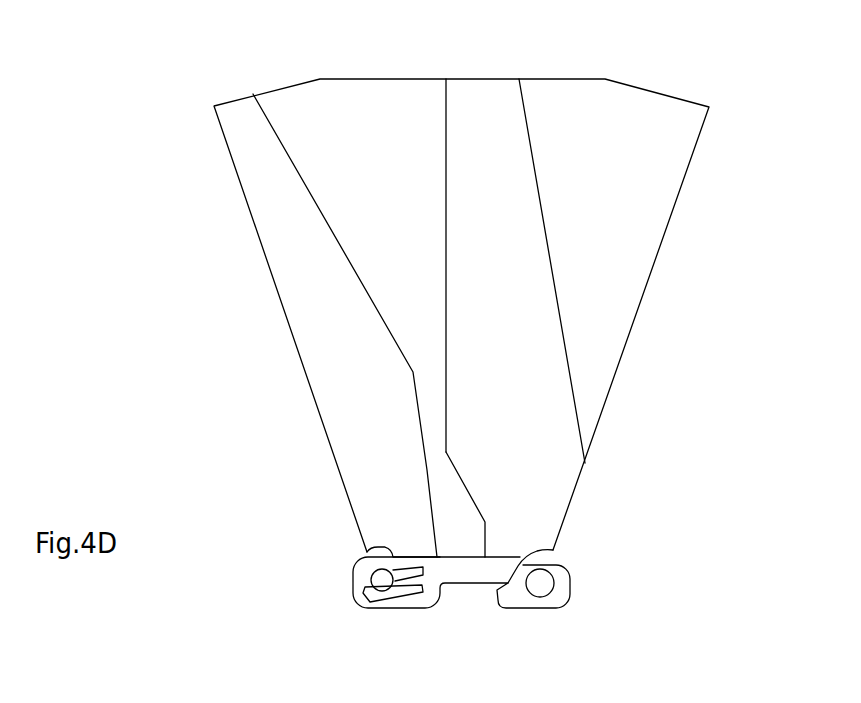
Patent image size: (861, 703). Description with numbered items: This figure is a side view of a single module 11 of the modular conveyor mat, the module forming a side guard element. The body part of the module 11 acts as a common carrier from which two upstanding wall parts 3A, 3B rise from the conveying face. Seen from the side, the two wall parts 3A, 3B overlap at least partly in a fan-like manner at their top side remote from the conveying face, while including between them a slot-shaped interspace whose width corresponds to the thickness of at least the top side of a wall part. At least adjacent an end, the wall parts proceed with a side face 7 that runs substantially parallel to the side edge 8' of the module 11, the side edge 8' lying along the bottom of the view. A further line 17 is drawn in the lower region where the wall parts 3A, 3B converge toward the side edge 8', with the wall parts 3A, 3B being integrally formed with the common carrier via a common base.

The module 11 is at (130, 220).
The side face 7 is at (477, 97).
The wall part 3B is at (332, 349).
The wall part 3A is at (583, 349).
The lower fold seam 17 is at (463, 525).
The side edge 8' is at (461, 597).